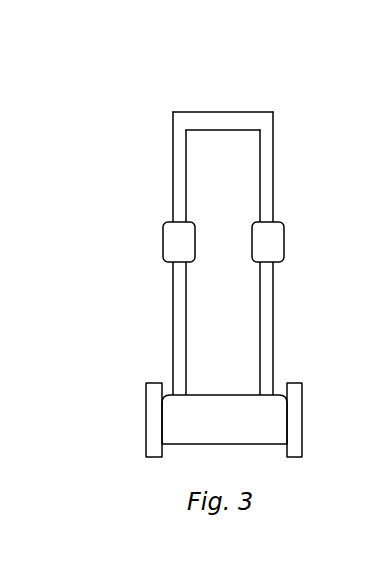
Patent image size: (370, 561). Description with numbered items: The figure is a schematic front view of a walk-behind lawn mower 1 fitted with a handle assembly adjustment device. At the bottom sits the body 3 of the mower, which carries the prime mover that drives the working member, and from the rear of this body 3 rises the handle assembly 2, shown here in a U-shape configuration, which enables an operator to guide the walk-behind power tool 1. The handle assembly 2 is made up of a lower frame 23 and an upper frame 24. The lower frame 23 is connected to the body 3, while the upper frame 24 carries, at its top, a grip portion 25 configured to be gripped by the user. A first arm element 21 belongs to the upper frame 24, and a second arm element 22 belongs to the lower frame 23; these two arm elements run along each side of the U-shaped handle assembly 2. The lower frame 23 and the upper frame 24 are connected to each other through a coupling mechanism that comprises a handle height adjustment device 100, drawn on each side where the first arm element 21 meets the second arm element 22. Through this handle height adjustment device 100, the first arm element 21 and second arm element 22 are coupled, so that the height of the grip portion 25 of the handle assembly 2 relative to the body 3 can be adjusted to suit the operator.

The walk-behind lawn mower 1 is at (101, 64).
The handle assembly 2 is at (312, 113).
The body 3 is at (224, 420).
The first arm element 21 is at (259, 147).
The second arm element 22 is at (259, 285).
The lower frame 23 is at (125, 395).
The upper frame 24 is at (125, 118).
The grip portion 25 is at (228, 112).
The handle height adjustment device 100 is at (163, 240).